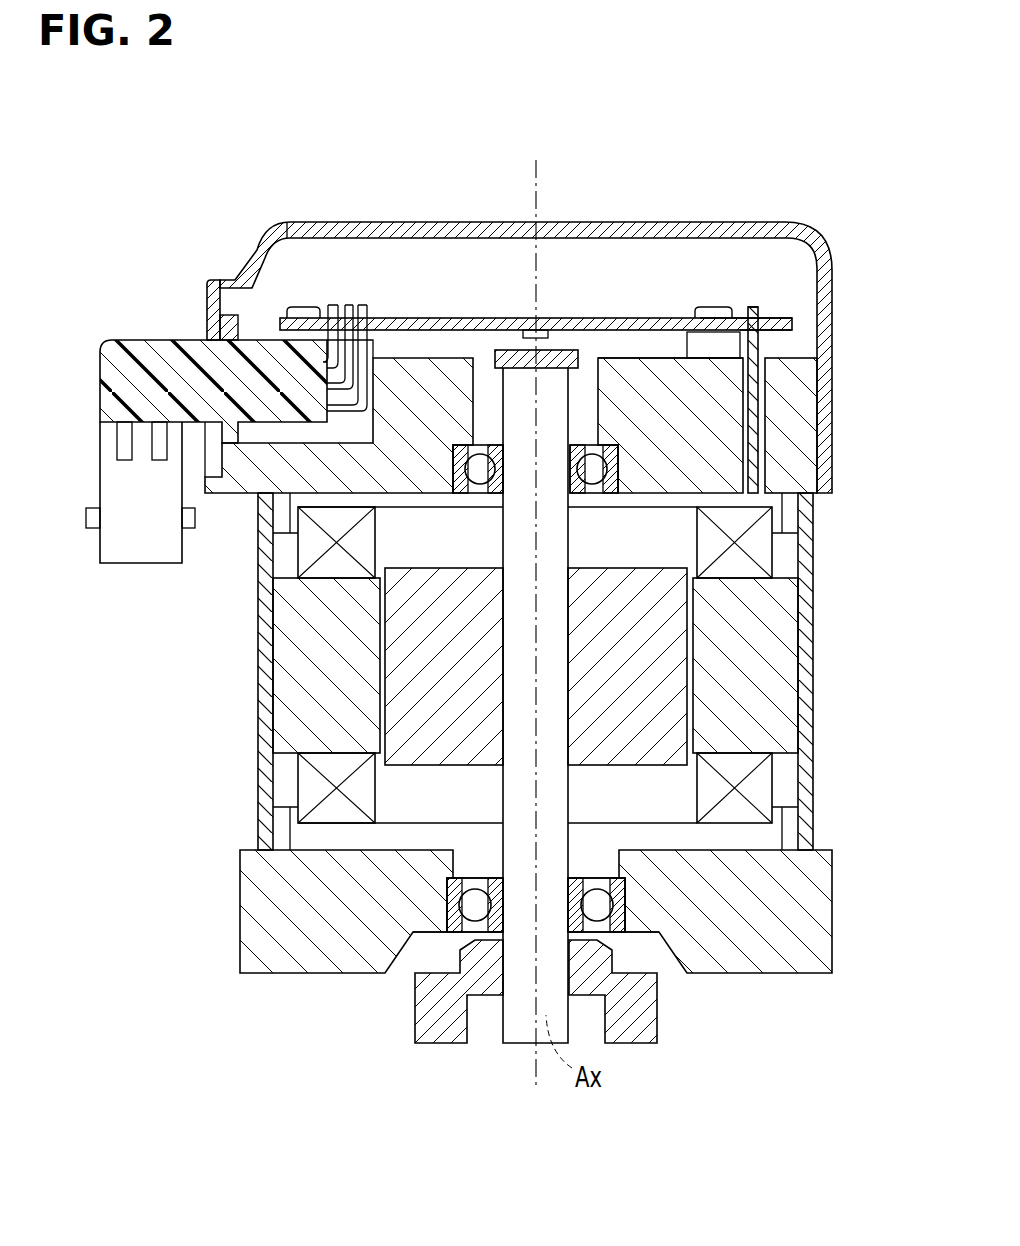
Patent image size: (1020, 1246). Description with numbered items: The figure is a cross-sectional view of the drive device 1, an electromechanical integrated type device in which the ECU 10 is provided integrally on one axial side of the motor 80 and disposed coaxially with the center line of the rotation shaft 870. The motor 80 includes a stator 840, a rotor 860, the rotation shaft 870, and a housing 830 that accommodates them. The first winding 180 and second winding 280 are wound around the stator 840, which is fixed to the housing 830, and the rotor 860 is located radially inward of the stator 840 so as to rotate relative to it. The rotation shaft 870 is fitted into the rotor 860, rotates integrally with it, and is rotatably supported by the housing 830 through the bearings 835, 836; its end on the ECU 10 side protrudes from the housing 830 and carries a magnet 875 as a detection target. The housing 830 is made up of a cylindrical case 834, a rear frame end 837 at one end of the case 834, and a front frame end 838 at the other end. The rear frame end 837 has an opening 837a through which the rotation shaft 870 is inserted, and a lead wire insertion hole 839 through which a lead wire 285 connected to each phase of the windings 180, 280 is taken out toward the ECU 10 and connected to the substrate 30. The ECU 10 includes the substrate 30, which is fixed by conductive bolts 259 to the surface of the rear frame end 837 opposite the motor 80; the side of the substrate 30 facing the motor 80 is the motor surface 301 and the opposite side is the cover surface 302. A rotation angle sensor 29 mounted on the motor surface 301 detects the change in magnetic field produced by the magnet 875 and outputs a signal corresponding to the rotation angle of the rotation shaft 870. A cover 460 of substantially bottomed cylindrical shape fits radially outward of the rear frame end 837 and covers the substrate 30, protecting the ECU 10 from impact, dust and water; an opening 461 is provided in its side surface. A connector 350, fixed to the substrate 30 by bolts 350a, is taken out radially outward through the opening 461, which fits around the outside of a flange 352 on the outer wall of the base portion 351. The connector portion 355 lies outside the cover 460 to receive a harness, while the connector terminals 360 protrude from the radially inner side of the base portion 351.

The drive device 1 is at (282, 160).
The ECU 10 is at (527, 321).
The cover 460 is at (757, 225).
The opening 461 is at (212, 340).
The connector 350 is at (203, 372).
The bolts 350a is at (287, 222).
The base portion 351 is at (118, 380).
The flange 352 is at (231, 330).
The connector portion 355 is at (110, 487).
The connector terminals 360 is at (345, 305).
The substrate 30 is at (589, 240).
The motor surface 301 is at (793, 332).
The cover surface 302 is at (790, 318).
The bolts 259 is at (704, 310).
The rotation angle sensor 29 is at (538, 330).
The magnet 875 is at (508, 351).
The rear frame end 837 is at (551, 320).
The opening 837a is at (628, 357).
The lead wire insertion hole 839 is at (823, 372).
The lead wire 285 is at (758, 306).
The bearing 835 is at (600, 468).
The housing 830 is at (585, 671).
The case 834 is at (805, 627).
The first winding 180 is at (439, 665).
The second winding 280 is at (308, 557).
The stator 840 is at (310, 640).
The rotor 860 is at (418, 688).
The rotation shaft 870 is at (520, 735).
The motor 80 is at (507, 946).
The bearing 836 is at (598, 905).
The front frame end 838 is at (805, 925).